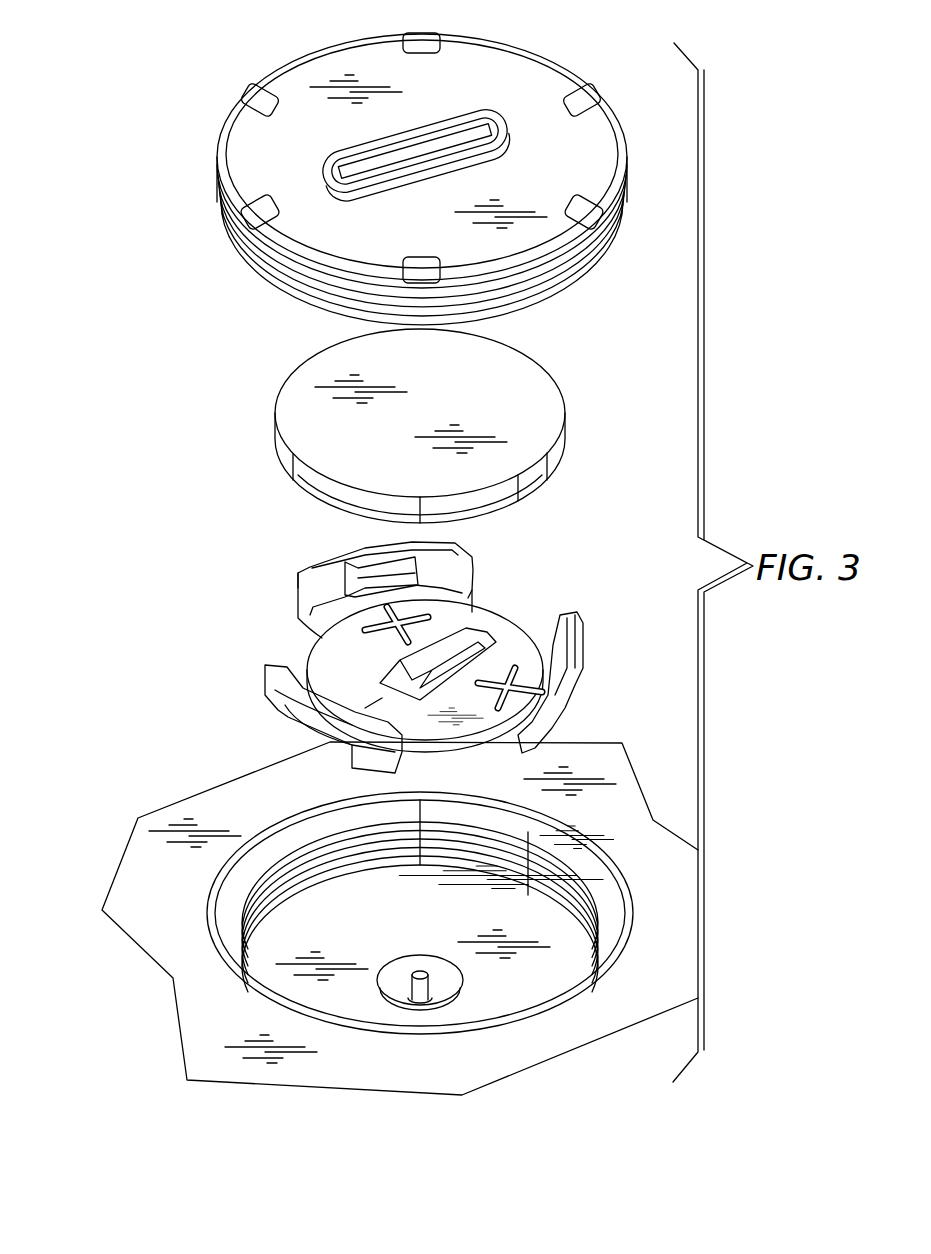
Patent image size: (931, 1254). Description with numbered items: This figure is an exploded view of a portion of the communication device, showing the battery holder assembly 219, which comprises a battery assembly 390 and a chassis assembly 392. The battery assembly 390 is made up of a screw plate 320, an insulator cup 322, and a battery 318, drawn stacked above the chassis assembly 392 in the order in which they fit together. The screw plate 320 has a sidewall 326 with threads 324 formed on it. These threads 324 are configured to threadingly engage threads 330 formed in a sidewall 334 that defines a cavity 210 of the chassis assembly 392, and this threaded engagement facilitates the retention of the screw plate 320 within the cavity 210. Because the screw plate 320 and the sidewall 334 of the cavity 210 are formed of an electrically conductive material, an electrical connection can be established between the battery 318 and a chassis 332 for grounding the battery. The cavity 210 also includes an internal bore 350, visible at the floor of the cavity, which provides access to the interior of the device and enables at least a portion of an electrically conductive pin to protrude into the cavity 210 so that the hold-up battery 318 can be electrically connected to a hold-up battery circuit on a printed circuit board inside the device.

The battery holder assembly 219 is at (557, 38).
The screw plate 320 is at (230, 88).
The threads 324 is at (236, 234).
The sidewall 326 is at (270, 278).
The battery 318 is at (280, 368).
The insulator cup 322 is at (291, 559).
The battery assembly 390 is at (142, 110).
The chassis assembly 392 is at (113, 774).
The threads 330 is at (372, 848).
The cavity 210 is at (555, 938).
The sidewall 334 is at (600, 932).
The chassis 332 is at (676, 961).
The internal bore 350 is at (405, 980).